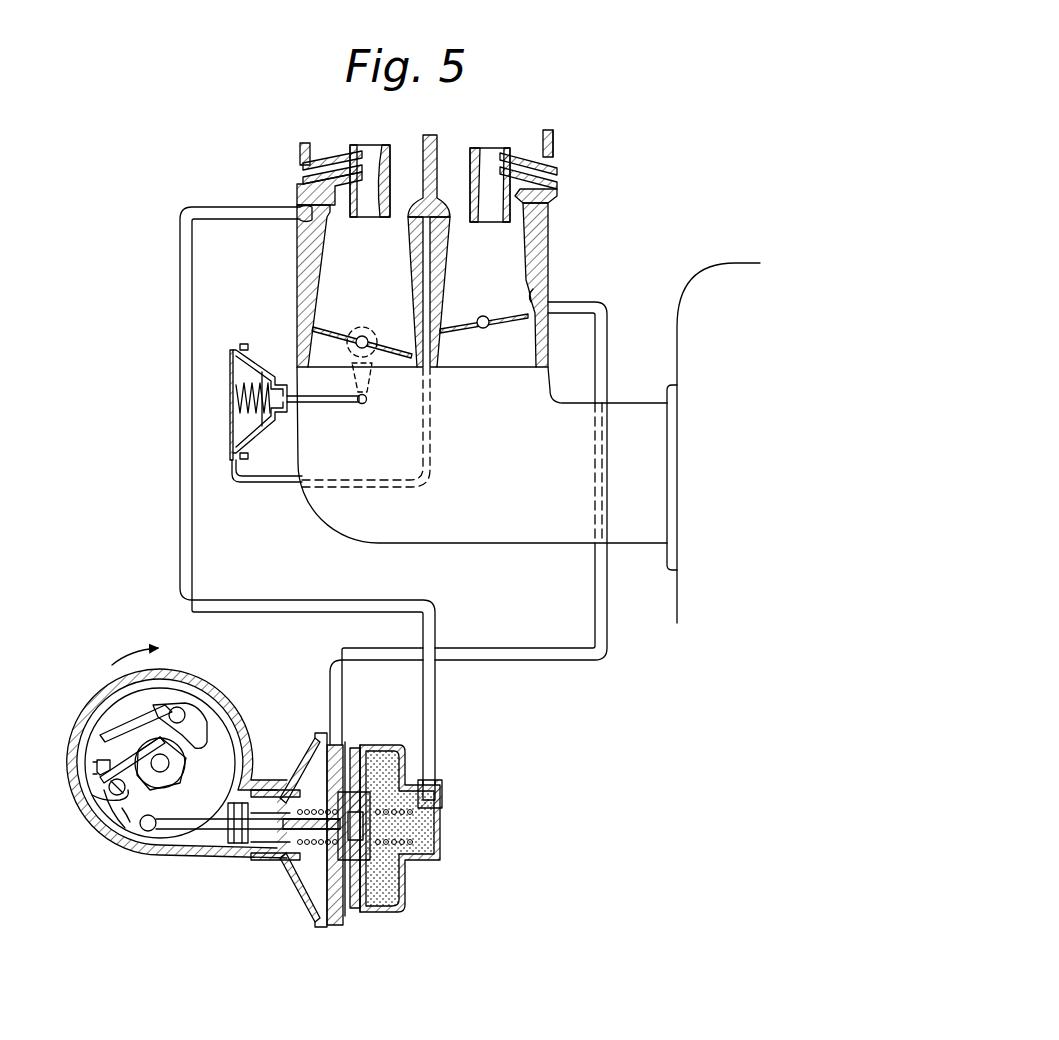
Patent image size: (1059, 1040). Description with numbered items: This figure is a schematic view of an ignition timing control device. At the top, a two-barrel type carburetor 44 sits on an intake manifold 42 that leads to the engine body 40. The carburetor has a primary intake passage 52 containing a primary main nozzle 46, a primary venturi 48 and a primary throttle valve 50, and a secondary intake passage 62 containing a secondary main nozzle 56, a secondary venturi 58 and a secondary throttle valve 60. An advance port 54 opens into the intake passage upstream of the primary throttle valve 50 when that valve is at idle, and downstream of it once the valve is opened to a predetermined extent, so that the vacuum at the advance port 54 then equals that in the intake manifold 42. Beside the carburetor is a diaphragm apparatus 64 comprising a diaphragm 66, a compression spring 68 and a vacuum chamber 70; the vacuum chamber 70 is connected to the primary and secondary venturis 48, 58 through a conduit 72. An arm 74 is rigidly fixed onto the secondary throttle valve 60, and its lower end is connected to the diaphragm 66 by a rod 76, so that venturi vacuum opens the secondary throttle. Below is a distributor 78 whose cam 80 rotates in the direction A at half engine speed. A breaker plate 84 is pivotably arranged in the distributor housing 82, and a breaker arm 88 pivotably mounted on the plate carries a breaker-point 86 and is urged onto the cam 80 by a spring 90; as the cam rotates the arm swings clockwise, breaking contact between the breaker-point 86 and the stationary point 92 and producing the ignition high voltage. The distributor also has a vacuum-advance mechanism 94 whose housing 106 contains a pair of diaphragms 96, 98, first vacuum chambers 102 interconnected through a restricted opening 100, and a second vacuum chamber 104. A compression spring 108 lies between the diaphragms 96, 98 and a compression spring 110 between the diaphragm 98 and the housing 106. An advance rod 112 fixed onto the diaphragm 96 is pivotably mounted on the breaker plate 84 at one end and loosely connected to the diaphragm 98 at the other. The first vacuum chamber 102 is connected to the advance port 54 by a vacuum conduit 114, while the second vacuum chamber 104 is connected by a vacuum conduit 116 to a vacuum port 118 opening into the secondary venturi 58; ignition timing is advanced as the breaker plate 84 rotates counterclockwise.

The engine body 40 is at (725, 262).
The intake manifold 42 is at (631, 403).
The two-barrel type carburetor 44 is at (565, 143).
The primary main nozzle 46 is at (531, 157).
The primary venturi 48 is at (550, 240).
The primary throttle valve 50 is at (505, 316).
The primary intake passage 52 is at (470, 264).
The advance port 54 is at (548, 290).
The secondary main nozzle 56 is at (348, 162).
The secondary venturi 58 is at (312, 242).
The secondary throttle valve 60 is at (342, 330).
The secondary intake passage 62 is at (348, 264).
The diaphragm apparatus 64 is at (234, 348).
The diaphragm 66 is at (263, 360).
The compression spring 68 is at (240, 404).
The vacuum chamber 70 is at (234, 436).
The conduit 72 is at (385, 488).
The arm 74 is at (368, 397).
The rod 76 is at (318, 403).
The distributor 78 is at (90, 692).
The cam 80 is at (182, 768).
The distributor housing 82 is at (222, 692).
The breaker plate 84 is at (124, 822).
The breaker-point 86 is at (100, 766).
The breaker arm 88 is at (125, 750).
The spring 90 is at (165, 702).
The stationary point 92 is at (108, 786).
The vacuum-advance mechanism 94 is at (292, 890).
The diaphragm 96 is at (306, 902).
The diaphragm 98 is at (402, 888).
The restricted opening 100 is at (334, 915).
The first vacuum chambers 102 is at (355, 770).
The second vacuum chamber 104 is at (382, 752).
The housing 106 is at (392, 913).
The compression spring 108 is at (290, 870).
The compression spring 110 is at (430, 866).
The advance rod 112 is at (262, 836).
The vacuum conduit 114 is at (563, 661).
The vacuum conduit 116 is at (281, 612).
The vacuum port 118 is at (320, 207).